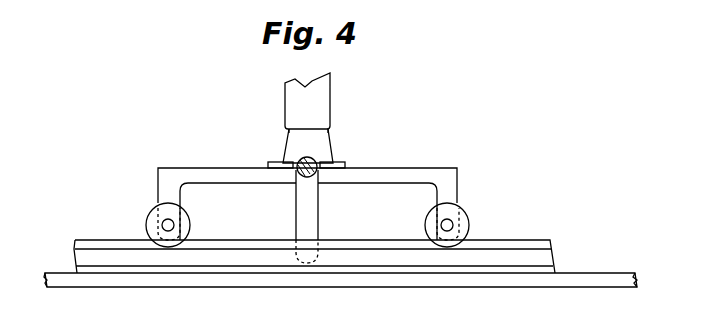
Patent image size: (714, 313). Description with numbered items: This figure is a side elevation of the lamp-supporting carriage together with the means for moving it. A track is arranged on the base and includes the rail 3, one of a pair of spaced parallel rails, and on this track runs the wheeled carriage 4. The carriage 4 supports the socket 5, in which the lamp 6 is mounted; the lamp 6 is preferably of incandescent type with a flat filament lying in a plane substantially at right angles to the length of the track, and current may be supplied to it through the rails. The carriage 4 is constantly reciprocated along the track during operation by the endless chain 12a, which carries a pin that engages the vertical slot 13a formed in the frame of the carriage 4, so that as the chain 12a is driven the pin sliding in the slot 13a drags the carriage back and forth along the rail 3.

The rail 3 is at (378, 246).
The wheeled carriage 4 is at (234, 174).
The socket 5 is at (290, 137).
The lamp 6 is at (290, 96).
The endless chain 12a is at (318, 161).
The vertical slot 13a is at (306, 211).